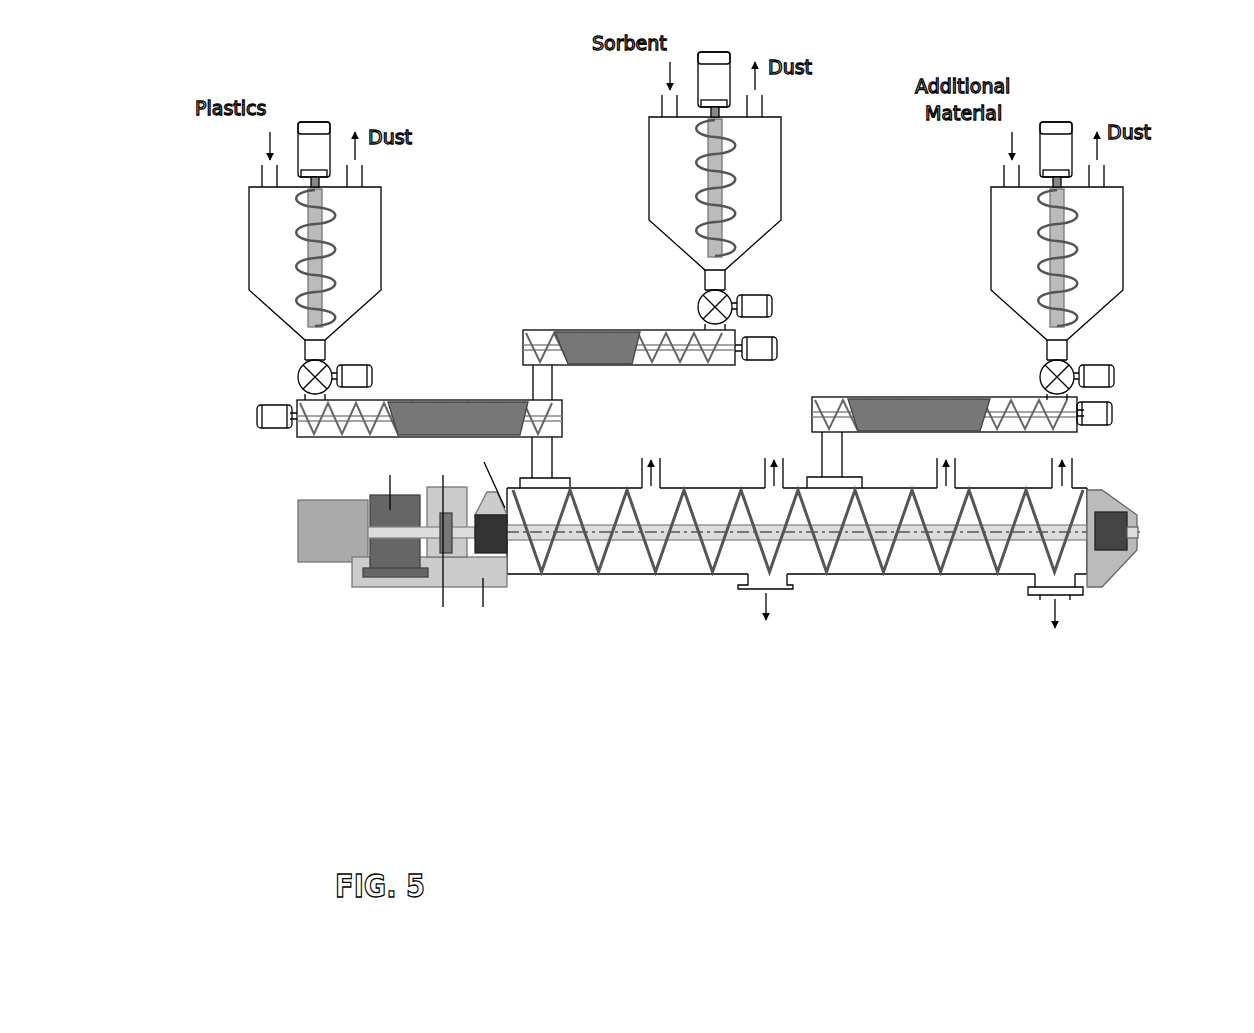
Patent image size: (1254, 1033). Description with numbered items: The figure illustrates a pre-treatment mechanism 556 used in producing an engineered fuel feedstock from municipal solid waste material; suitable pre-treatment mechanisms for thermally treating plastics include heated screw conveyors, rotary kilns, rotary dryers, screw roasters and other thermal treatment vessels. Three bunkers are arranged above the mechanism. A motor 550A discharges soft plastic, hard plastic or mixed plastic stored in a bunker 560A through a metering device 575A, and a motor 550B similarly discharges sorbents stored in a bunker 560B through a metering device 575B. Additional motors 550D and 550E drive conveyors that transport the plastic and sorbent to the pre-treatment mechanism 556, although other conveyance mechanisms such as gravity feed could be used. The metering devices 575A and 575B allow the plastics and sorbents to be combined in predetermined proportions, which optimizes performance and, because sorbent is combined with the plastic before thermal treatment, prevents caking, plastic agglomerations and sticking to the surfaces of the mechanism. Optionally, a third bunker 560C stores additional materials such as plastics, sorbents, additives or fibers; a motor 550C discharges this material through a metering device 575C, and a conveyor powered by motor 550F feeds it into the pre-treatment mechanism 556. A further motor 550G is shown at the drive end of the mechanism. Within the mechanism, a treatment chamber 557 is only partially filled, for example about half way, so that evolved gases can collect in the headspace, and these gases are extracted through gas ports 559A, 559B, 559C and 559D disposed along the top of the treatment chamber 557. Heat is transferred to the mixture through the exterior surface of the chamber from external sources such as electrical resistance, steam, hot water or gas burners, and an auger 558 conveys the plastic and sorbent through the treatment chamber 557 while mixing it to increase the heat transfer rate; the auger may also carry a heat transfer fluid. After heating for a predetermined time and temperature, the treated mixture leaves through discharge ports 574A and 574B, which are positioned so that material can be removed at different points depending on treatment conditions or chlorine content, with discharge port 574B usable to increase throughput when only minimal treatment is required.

The motor 550A is at (334, 118).
The motor 550B is at (733, 52).
The motor 550C is at (1093, 93).
The motor 550D is at (385, 444).
The motor 550E is at (677, 365).
The motor 550F is at (987, 442).
The drive motor 550G is at (323, 512).
The pre-treatment mechanism 556 is at (769, 546).
The treatment chamber 557 is at (630, 576).
The auger 558 is at (698, 541).
The gas port 559A is at (628, 462).
The gas port 559B is at (749, 462).
The gas port 559C is at (923, 462).
The gas port 559D is at (1039, 462).
The bunker 560A is at (453, 242).
The bunker 560B is at (852, 175).
The third bunker 560C is at (1199, 242).
The discharge port 574A is at (1055, 615).
The discharge port 574B is at (766, 611).
The metering device 575A is at (363, 380).
The metering device 575B is at (764, 310).
The metering device 575C is at (1105, 380).